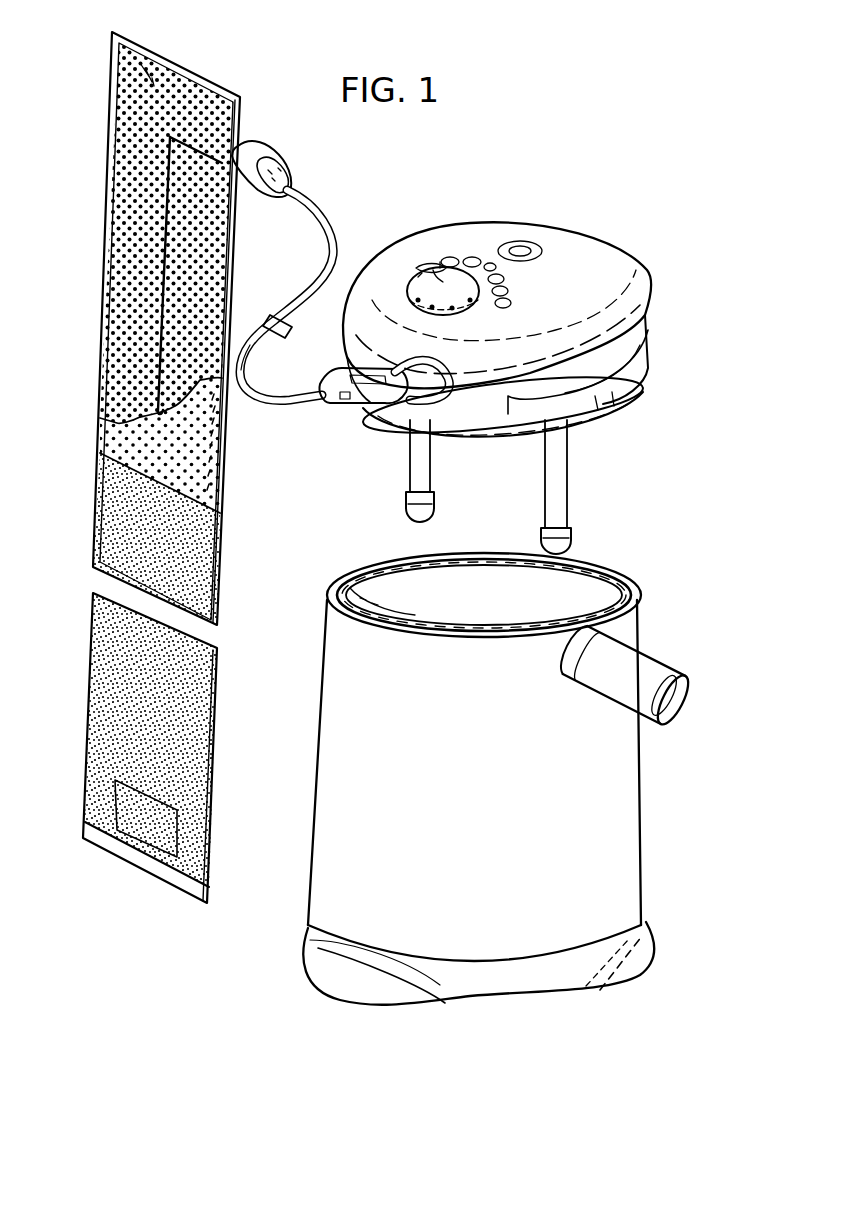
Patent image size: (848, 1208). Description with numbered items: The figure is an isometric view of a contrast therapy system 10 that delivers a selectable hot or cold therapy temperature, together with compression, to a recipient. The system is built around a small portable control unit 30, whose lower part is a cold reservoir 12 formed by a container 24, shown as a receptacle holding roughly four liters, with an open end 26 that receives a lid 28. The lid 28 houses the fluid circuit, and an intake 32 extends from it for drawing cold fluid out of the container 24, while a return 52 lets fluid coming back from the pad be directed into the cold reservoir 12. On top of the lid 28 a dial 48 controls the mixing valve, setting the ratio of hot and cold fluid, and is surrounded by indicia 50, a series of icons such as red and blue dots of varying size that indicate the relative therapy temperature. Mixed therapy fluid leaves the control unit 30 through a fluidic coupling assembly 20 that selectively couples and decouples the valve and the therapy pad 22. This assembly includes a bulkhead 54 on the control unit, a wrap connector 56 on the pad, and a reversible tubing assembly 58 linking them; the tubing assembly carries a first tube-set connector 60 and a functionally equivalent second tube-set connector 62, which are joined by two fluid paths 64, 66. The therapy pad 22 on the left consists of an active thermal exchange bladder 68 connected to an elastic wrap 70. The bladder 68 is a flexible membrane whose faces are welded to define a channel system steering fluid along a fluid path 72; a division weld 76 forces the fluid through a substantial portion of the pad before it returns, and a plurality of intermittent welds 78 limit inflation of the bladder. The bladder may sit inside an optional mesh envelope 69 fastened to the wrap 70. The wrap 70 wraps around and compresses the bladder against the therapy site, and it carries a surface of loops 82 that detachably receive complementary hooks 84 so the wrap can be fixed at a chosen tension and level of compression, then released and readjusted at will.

The contrast therapy system 10 is at (100, 92).
The cold reservoir 12 is at (610, 572).
The fluidic coupling assembly 20 is at (306, 195).
The therapy pad 22 is at (100, 300).
The container 24 is at (636, 814).
The open end 26 is at (555, 586).
The lid 28 is at (655, 291).
The portable control unit 30 is at (694, 335).
The intake 32 is at (408, 470).
The dial 48 is at (434, 266).
The indicia 50 is at (492, 312).
The return 52 is at (570, 494).
The bulkhead 54 is at (428, 378).
The wrap connector 56 is at (244, 152).
The reversible tubing assembly 58 is at (310, 208).
The first tube-set connector 60 is at (346, 404).
The second tube-set connector 62 is at (290, 170).
The fluid path 64 is at (262, 327).
The fluid path 66 is at (262, 350).
The active thermal exchange bladder 68 is at (126, 382).
The mesh envelope 69 is at (216, 440).
The elastic wrap 70 is at (97, 514).
The fluid path 72 is at (140, 133).
The division weld 76 is at (152, 206).
The intermittent welds 78 is at (158, 84).
The loops 82 is at (200, 856).
The hooks 84 is at (210, 894).